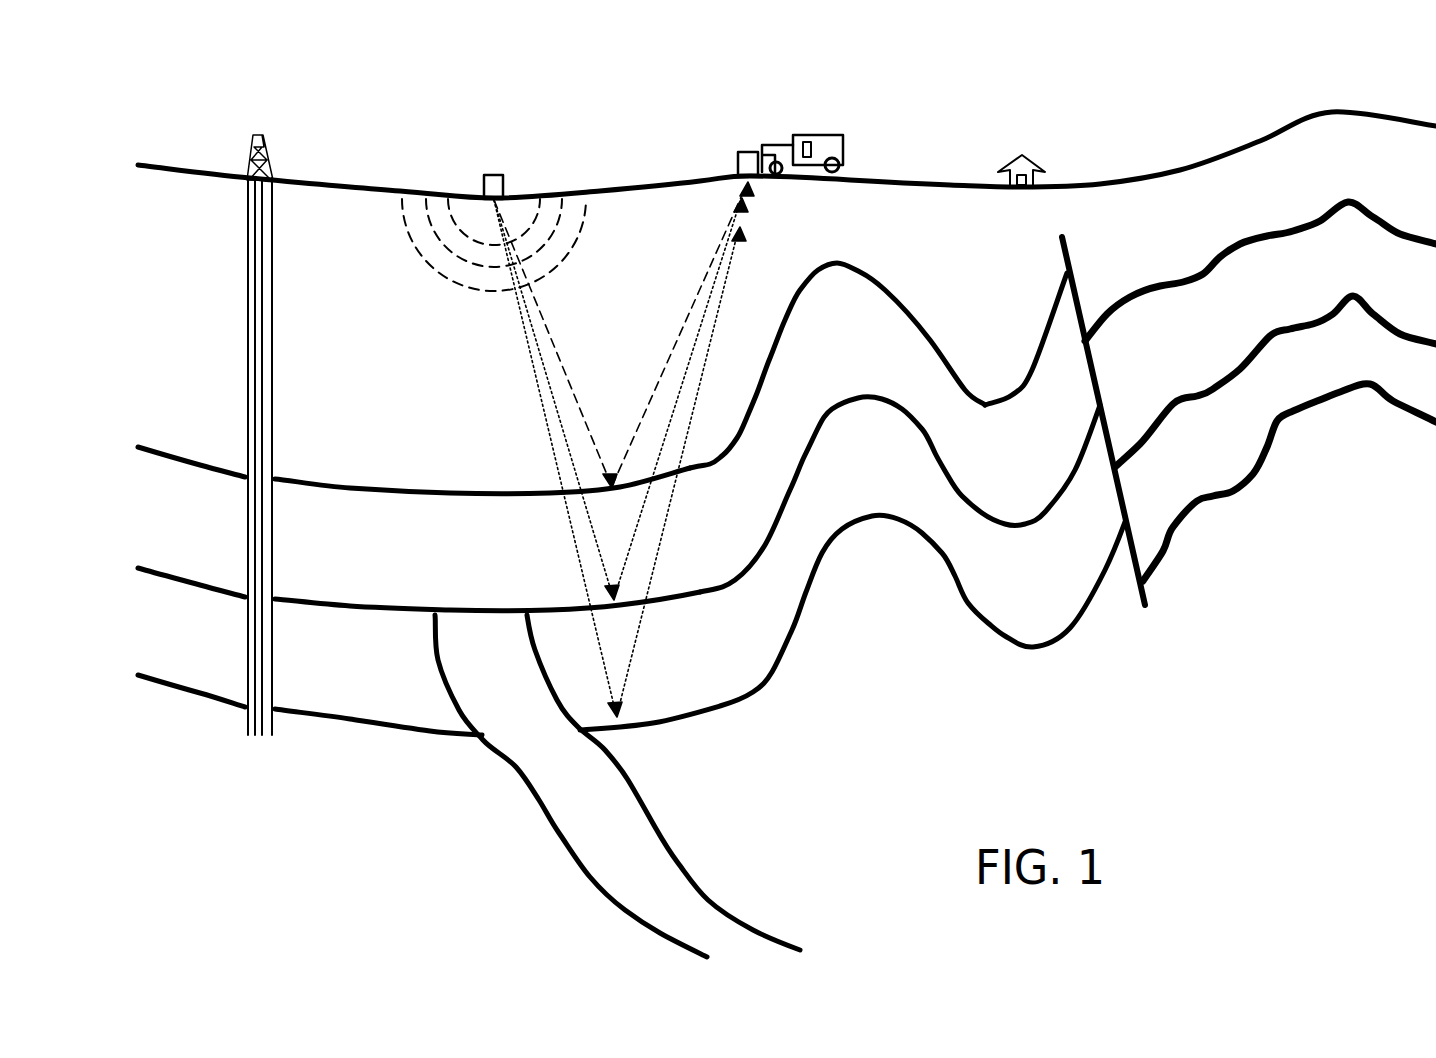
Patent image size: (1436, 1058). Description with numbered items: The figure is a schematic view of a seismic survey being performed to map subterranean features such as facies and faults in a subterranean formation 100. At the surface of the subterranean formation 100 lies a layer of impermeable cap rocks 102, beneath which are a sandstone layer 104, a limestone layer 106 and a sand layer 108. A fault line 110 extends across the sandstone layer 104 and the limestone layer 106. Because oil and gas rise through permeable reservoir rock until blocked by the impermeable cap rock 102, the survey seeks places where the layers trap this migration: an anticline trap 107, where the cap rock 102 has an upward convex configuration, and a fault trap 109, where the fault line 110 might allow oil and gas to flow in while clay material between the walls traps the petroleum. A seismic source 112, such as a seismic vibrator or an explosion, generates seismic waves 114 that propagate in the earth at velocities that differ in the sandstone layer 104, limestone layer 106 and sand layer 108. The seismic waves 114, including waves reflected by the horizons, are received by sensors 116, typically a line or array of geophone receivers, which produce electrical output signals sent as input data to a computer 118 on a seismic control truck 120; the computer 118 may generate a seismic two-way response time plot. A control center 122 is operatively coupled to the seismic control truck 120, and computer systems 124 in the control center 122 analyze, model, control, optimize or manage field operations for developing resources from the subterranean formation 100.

The subterranean formation 100 is at (1072, 90).
The layer of impermeable cap rocks 102 is at (190, 336).
The sandstone layer 104 is at (372, 559).
The limestone layer 106 is at (192, 639).
The anticline trap 107 is at (862, 308).
The sand layer 108 is at (618, 814).
The fault trap 109 is at (1068, 356).
The fault line 110 is at (1072, 262).
The seismic source 112 is at (494, 174).
The seismic waves 114 is at (408, 243).
The sensor or sensors 116 is at (745, 152).
The computer 118 is at (805, 141).
The seismic control truck 120 is at (815, 134).
The control center 122 is at (1045, 172).
The computer systems 124 is at (1012, 185).